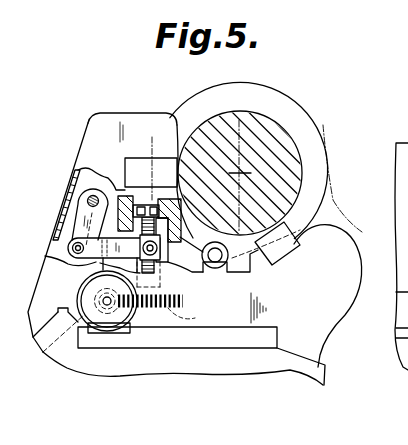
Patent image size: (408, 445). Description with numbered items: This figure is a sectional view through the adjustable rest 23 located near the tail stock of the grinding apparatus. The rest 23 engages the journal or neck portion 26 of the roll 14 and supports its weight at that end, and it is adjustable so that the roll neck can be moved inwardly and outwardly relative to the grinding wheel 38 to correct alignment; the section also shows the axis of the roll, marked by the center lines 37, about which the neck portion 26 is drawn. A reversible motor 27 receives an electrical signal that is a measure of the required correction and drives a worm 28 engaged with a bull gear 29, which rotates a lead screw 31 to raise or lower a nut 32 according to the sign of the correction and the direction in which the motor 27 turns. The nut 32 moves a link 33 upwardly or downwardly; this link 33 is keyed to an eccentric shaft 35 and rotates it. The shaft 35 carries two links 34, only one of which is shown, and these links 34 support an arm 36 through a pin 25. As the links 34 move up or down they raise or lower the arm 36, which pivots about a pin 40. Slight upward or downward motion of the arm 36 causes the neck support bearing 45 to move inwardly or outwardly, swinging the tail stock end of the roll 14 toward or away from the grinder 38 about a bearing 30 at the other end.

The roll 14 is at (279, 95).
The rest 23 is at (162, 368).
The pin 25 is at (87, 199).
The journal or neck portion 26 is at (285, 145).
The reversible motor 27 is at (107, 318).
The worm 28 is at (41, 353).
The bull gear 29 is at (182, 313).
The bearing 30 is at (279, 243).
The lead screw 31 is at (165, 272).
The nut 32 is at (133, 198).
The link 33 is at (103, 252).
The link 34 is at (68, 236).
The eccentric shaft 35 is at (73, 248).
The arm 36 is at (97, 131).
The wheel axis 37 is at (240, 172).
The grinding wheel 38 is at (302, 246).
The pin 40 is at (218, 264).
The neck support bearing 45 is at (161, 134).